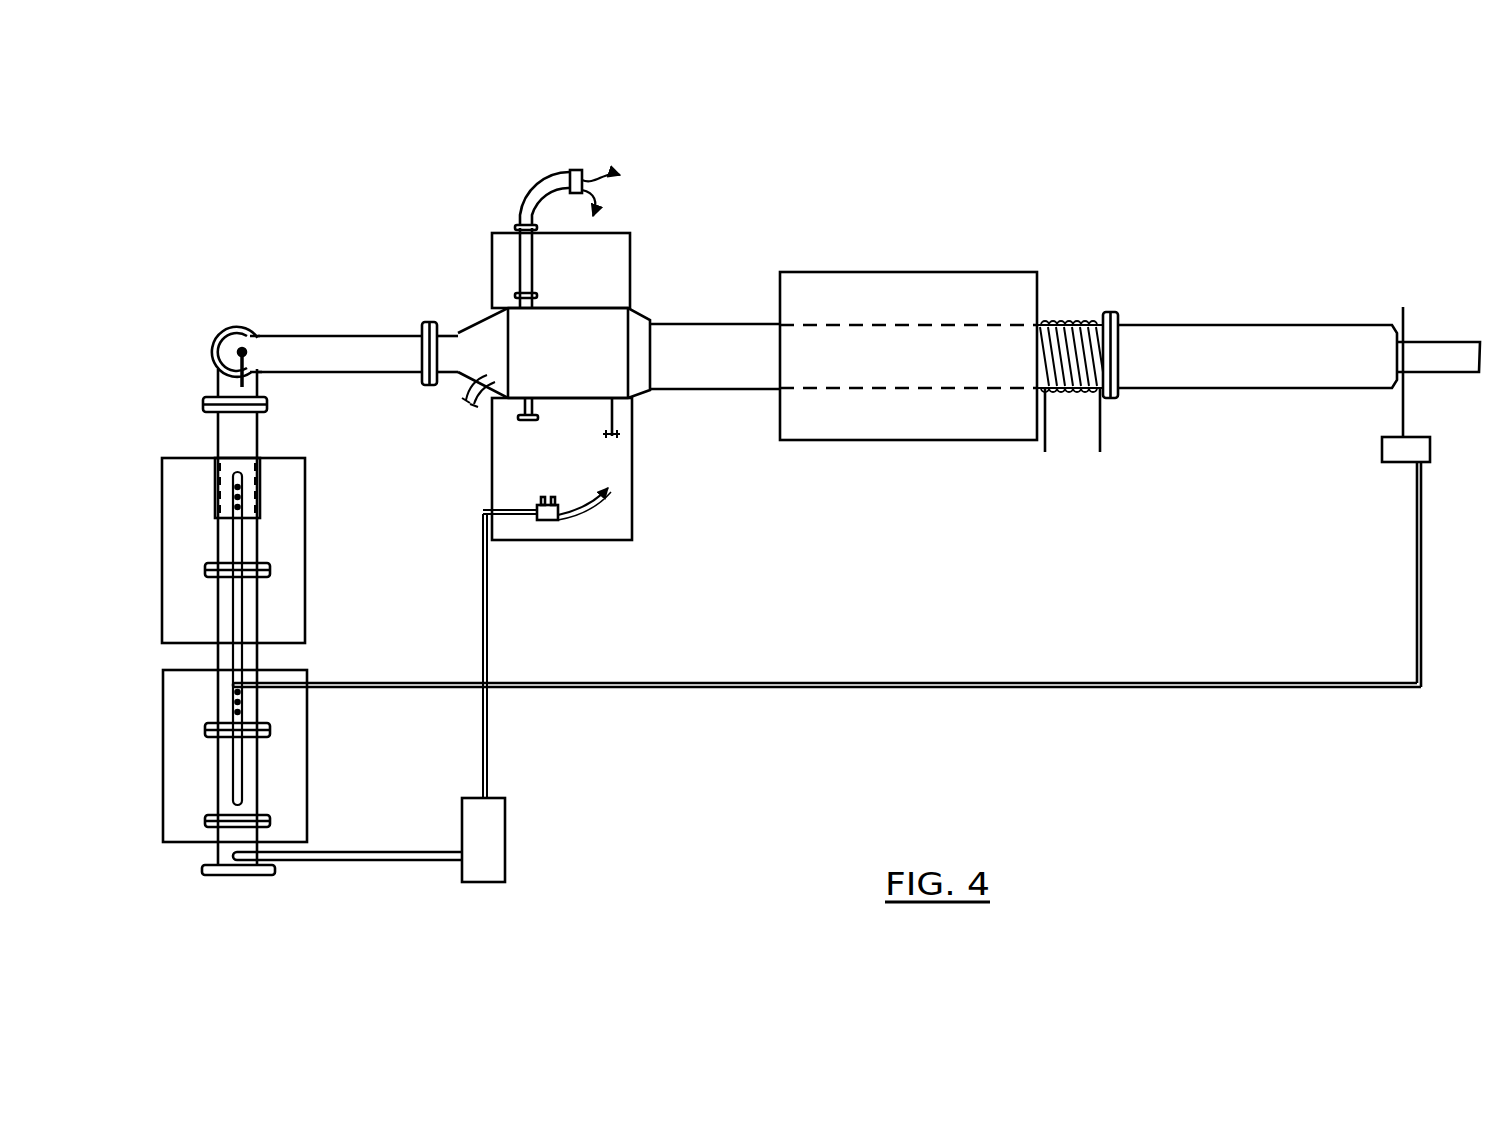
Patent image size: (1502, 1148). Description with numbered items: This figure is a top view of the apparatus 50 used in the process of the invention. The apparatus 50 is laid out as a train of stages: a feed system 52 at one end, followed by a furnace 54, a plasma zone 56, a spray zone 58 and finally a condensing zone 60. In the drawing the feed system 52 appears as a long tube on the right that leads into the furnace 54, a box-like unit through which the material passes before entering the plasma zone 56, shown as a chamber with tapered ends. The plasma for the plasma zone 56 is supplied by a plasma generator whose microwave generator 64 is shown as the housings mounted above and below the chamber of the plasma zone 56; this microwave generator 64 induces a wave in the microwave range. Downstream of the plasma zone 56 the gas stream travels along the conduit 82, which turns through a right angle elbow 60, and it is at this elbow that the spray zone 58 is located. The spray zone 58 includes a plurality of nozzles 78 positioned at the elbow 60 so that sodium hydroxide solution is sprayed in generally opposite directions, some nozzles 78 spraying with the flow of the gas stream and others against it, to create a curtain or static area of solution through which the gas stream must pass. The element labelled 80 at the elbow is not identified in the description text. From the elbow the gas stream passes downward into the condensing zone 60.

The apparatus 50 is at (1097, 220).
The feed system 52 is at (1217, 315).
The furnace 54 is at (925, 282).
The plasma zone 56 is at (618, 325).
The spray zone 58 is at (238, 338).
The condensing zone 60 is at (250, 620).
The microwave generator 64 is at (623, 244).
The nozzles 78 is at (252, 346).
The elbow 80 is at (217, 330).
The conduit 82 is at (323, 358).